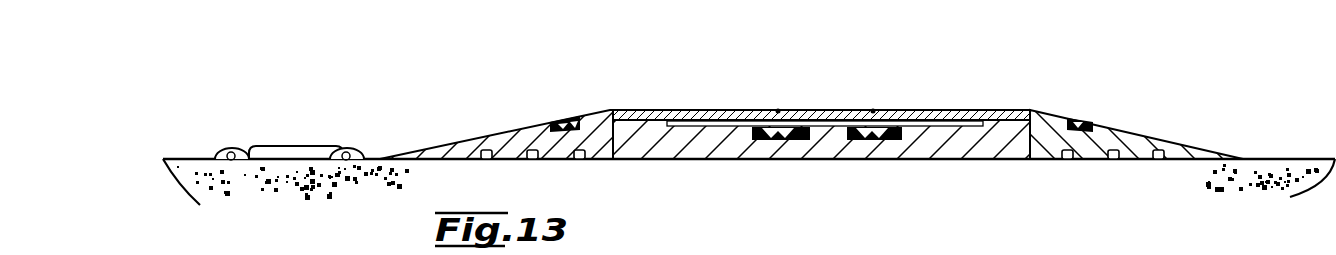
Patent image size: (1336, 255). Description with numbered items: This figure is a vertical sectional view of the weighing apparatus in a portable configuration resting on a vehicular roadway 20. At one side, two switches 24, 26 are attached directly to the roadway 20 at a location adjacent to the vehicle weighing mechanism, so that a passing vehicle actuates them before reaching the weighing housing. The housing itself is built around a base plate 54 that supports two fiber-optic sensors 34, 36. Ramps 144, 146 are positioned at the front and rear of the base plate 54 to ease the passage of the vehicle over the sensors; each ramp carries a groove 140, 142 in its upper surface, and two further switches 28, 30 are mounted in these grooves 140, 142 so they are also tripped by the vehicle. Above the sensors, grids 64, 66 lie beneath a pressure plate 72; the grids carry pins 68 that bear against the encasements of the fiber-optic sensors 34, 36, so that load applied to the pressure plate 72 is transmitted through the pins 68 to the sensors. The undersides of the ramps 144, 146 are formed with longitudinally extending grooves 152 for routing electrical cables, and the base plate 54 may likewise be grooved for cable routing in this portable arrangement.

The roadway 20 is at (251, 185).
The switch 24 is at (225, 148).
The switch 26 is at (288, 146).
The switch 28 is at (555, 121).
The switch 30 is at (1092, 124).
The fiber-optic sensor 34 is at (796, 141).
The fiber-optic sensor 36 is at (882, 141).
The base plate 54 is at (697, 160).
The grid 64 is at (779, 111).
The grid 66 is at (874, 111).
The pins 68 is at (770, 141).
The pressure plate 72 is at (700, 112).
The groove 140 is at (585, 118).
The groove 142 is at (1068, 120).
The ramp 144 is at (489, 133).
The ramp 146 is at (1183, 143).
The grooves 152 is at (534, 160).